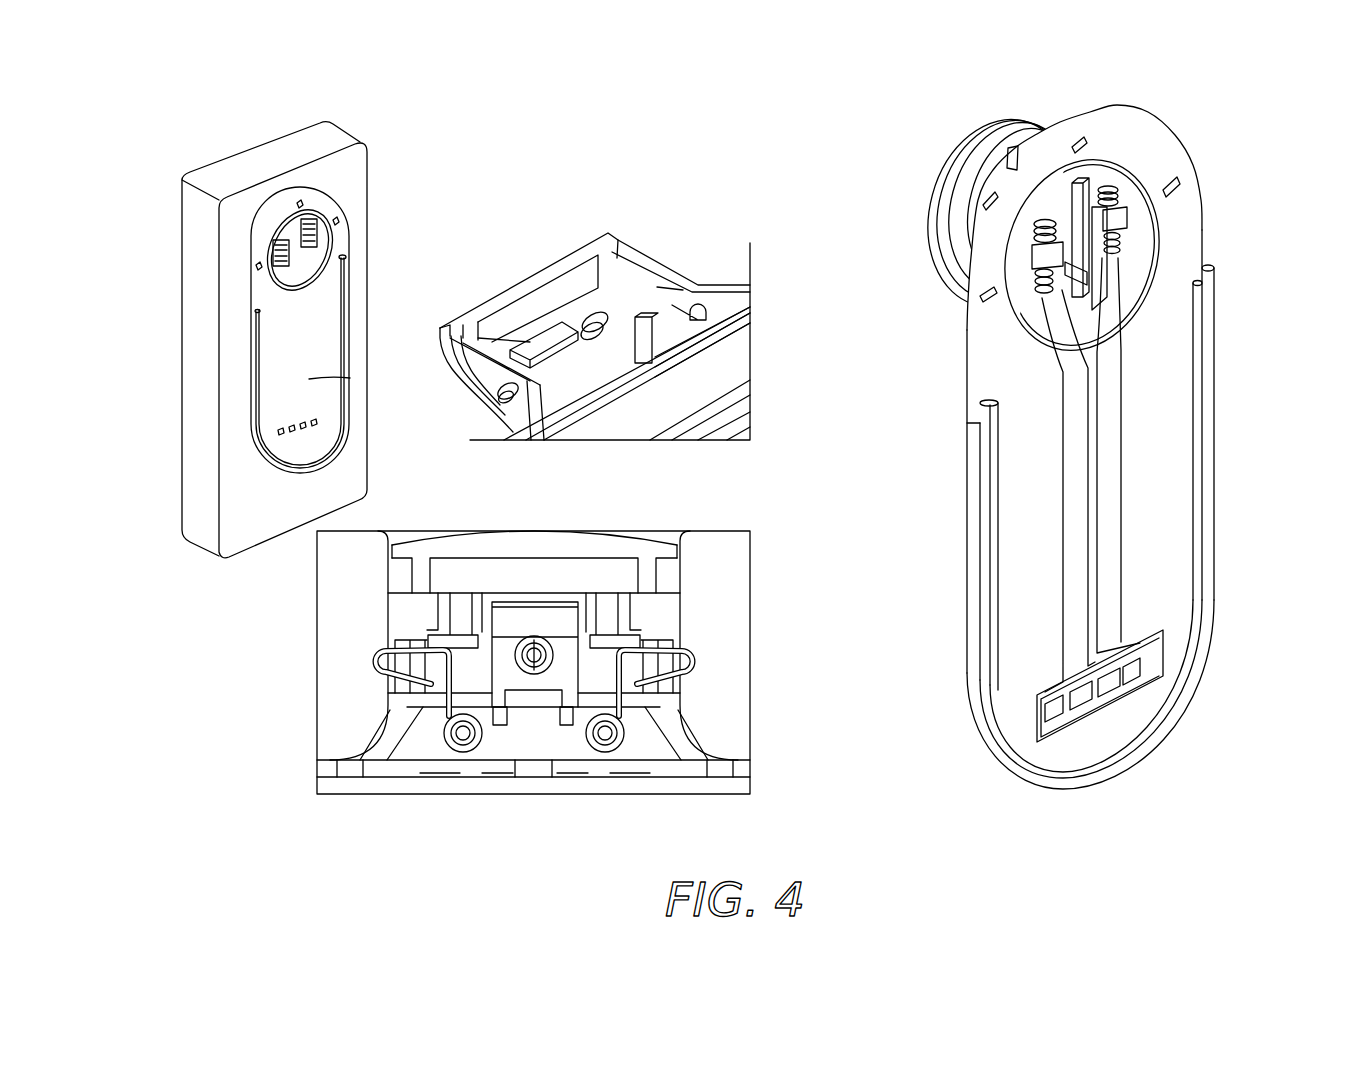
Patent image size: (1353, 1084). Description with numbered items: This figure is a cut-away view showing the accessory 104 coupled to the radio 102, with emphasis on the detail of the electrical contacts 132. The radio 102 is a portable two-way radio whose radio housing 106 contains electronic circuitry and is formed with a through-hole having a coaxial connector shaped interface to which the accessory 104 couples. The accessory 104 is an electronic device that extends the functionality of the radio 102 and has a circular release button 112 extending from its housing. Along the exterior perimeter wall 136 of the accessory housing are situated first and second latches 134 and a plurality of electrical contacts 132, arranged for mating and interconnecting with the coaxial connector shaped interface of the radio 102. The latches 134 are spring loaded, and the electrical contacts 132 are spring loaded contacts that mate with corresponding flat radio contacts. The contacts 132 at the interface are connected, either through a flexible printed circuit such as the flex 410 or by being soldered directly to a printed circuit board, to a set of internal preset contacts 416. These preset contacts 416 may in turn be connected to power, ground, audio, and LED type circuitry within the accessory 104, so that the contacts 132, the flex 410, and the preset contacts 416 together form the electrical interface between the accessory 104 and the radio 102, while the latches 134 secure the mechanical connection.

The radio 102 is at (262, 340).
The accessory 104 is at (318, 313).
The radio housing 106 is at (367, 187).
The circular release button 112 is at (530, 275).
The electrical contacts 132 is at (505, 392).
The first and second latches 134 is at (1033, 142).
The exterior perimeter wall 136 is at (350, 378).
The flex 410 is at (1110, 400).
The preset contacts 416 is at (1133, 668).